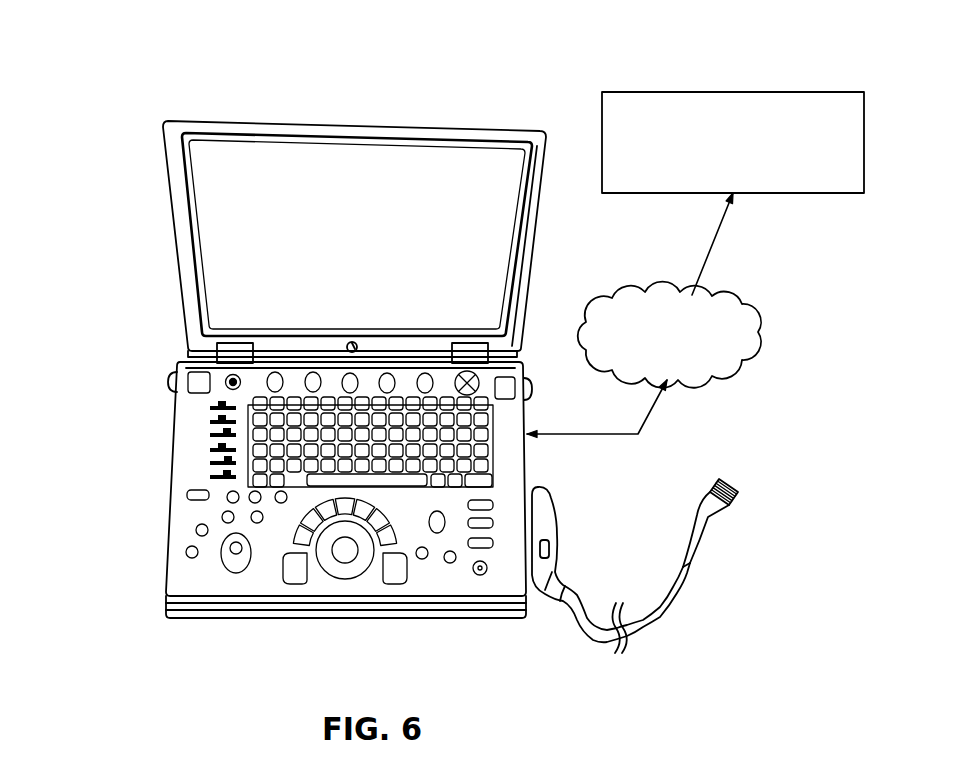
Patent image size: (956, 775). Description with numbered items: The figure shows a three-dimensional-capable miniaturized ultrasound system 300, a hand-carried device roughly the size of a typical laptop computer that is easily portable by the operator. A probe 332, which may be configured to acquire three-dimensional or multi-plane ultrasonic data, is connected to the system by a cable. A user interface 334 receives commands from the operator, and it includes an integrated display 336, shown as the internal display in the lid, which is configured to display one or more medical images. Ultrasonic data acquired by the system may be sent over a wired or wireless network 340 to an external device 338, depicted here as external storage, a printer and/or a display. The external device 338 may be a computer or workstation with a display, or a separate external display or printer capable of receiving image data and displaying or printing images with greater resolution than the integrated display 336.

The miniaturized ultrasound system 300 is at (155, 70).
The probe 332 is at (632, 647).
The user interface 334 is at (156, 390).
The integrated display 336 is at (163, 353).
The external device 338 is at (743, 92).
The network 340 is at (628, 292).